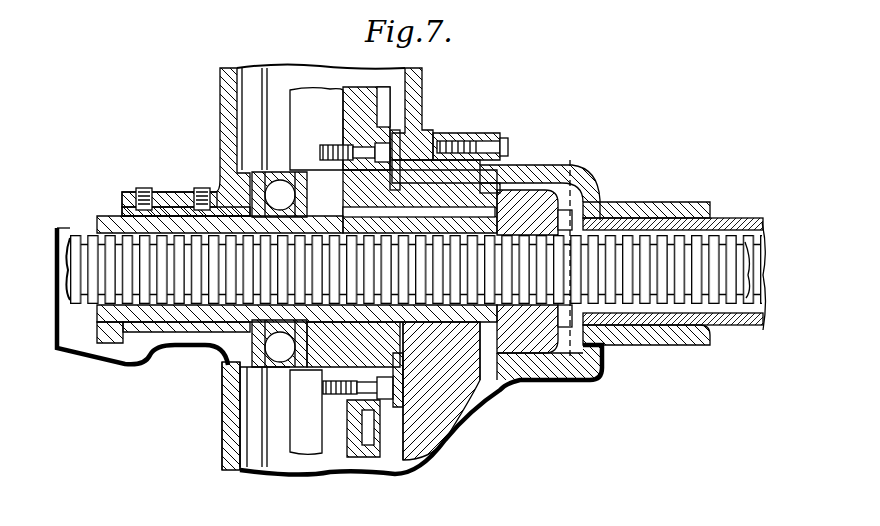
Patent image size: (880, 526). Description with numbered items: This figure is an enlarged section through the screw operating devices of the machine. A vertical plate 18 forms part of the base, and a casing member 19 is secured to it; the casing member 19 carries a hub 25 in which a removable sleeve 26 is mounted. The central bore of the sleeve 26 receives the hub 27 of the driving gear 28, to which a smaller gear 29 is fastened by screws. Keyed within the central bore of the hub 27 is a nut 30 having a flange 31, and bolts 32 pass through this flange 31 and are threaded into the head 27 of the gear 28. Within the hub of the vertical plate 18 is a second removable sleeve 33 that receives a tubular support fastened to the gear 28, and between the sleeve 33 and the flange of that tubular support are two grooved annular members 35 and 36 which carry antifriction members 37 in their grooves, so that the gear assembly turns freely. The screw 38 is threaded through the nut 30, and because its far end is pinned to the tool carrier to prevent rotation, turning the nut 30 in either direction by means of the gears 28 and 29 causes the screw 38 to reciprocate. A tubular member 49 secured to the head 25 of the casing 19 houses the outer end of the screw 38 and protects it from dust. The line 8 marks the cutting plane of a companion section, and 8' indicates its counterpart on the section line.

The cutting plane line 8 is at (329, 320).
The casing bolt 8' is at (568, 249).
The vertical plate 18 is at (224, 85).
The casing member 19 is at (420, 78).
The hub 25 is at (432, 138).
The removable sleeve 26 is at (413, 343).
The hub of driving gear 27 is at (407, 373).
The driving gear 28 is at (333, 440).
The gear 29 is at (367, 447).
The nut 30 is at (460, 330).
The flange 31 is at (518, 193).
The bolts 32 is at (568, 213).
The removable sleeve 33 is at (160, 210).
The grooved annular member 35 is at (267, 360).
The grooved annular member 36 is at (300, 367).
The antifriction members 37 is at (280, 348).
The screw 38 is at (737, 267).
The tubular member 49 is at (730, 220).